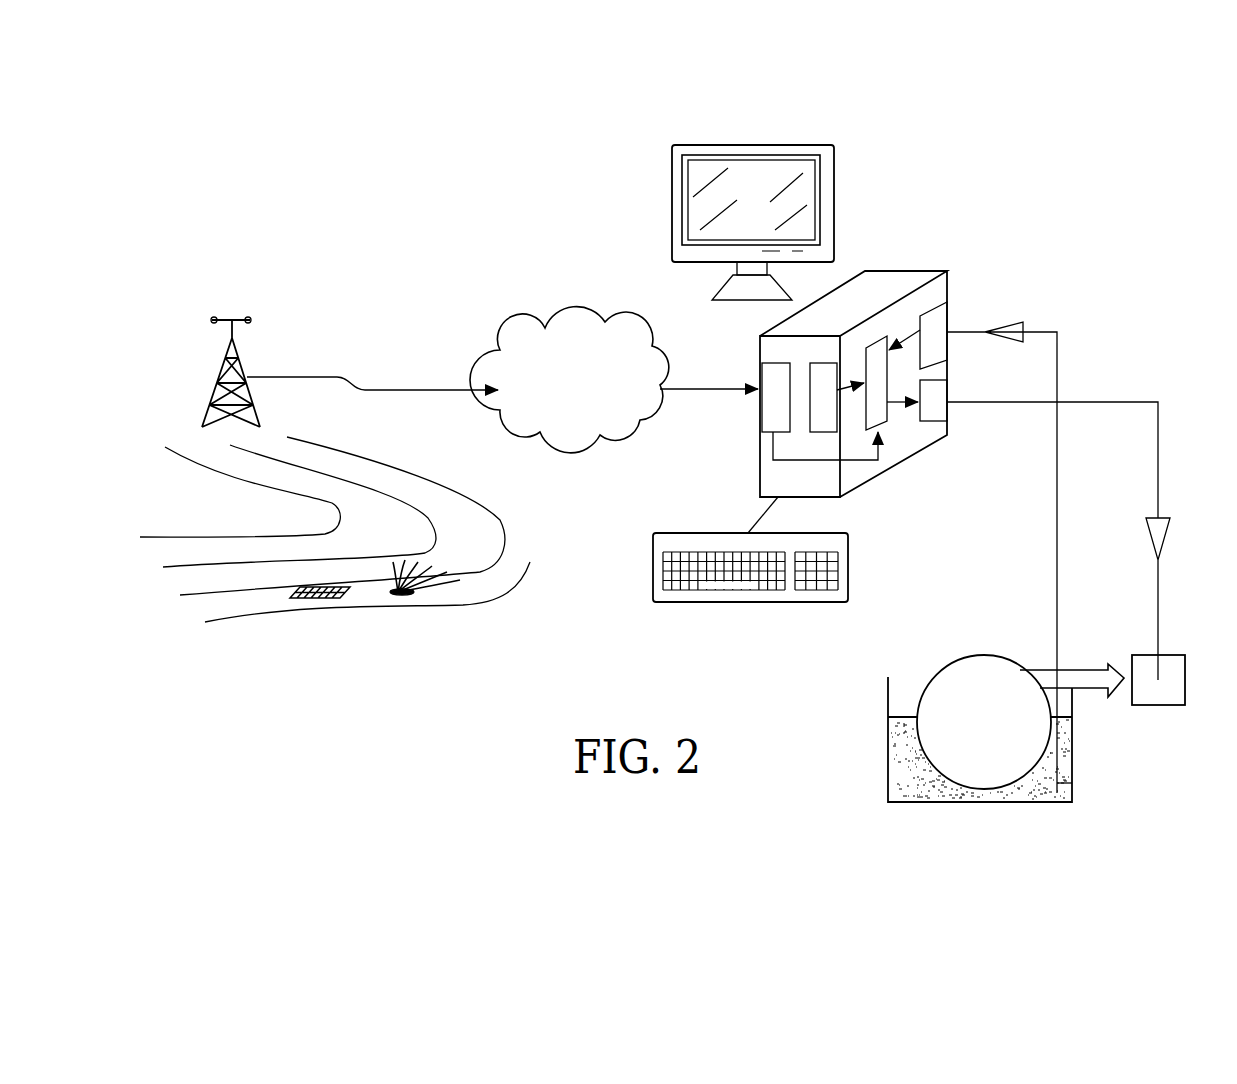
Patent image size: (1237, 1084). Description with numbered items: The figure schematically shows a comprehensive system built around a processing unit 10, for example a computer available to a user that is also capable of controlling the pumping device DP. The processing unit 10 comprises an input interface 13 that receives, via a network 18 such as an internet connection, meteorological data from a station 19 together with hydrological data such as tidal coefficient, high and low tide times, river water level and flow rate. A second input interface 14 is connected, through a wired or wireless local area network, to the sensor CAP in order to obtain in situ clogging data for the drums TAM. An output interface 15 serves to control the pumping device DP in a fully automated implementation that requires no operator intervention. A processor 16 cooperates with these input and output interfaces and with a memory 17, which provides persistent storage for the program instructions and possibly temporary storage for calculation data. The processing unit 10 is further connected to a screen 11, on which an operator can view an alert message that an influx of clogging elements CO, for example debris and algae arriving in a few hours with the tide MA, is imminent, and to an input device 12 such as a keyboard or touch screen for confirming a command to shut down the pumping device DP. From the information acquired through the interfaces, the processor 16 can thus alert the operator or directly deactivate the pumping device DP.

The processing unit 10 is at (845, 361).
The screen 11 is at (838, 193).
The input device 12 is at (748, 602).
The input interface 13 is at (772, 405).
The input interface 14 is at (940, 322).
The output interface 15 is at (935, 415).
The processor 16 is at (882, 407).
The memory 17 is at (825, 390).
The network 18 is at (545, 325).
The station 19 is at (217, 385).
The clogging elements CO is at (397, 593).
The tide MA is at (477, 593).
The drums TAM is at (960, 652).
The pumping device DP is at (1162, 707).
The sensor CAP is at (1063, 797).